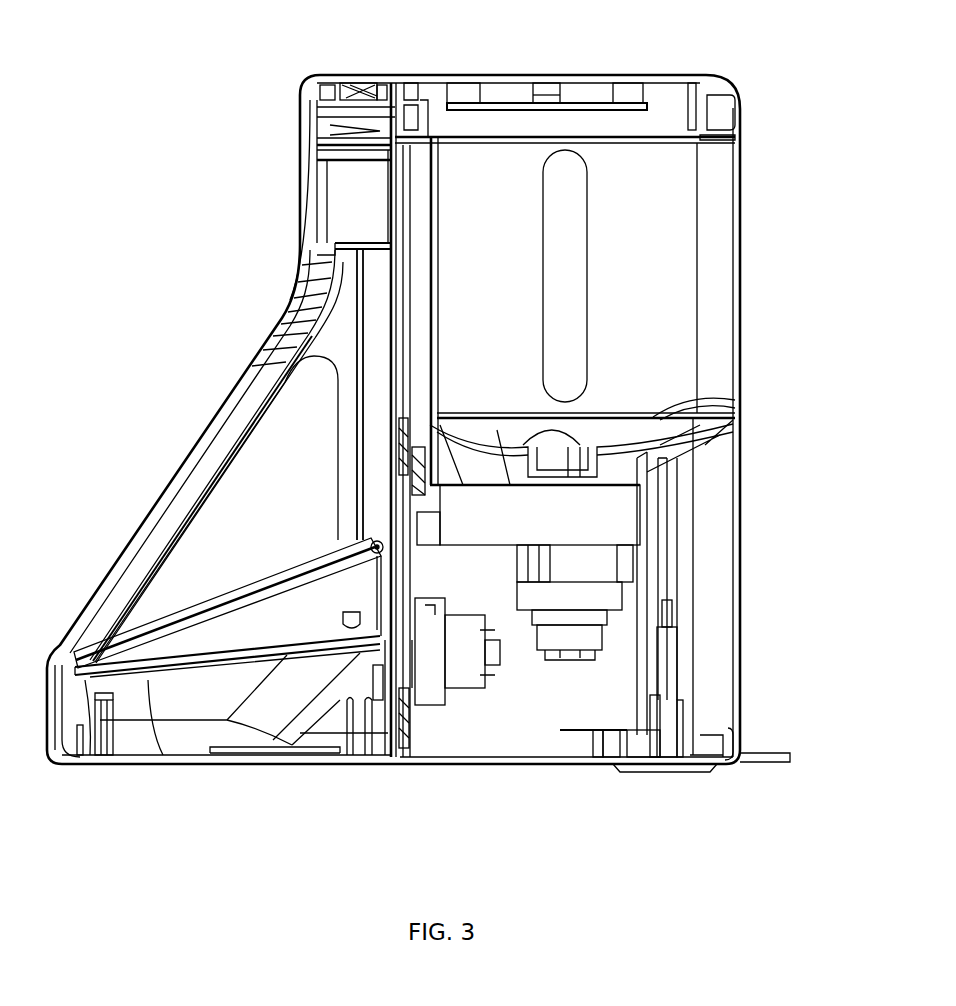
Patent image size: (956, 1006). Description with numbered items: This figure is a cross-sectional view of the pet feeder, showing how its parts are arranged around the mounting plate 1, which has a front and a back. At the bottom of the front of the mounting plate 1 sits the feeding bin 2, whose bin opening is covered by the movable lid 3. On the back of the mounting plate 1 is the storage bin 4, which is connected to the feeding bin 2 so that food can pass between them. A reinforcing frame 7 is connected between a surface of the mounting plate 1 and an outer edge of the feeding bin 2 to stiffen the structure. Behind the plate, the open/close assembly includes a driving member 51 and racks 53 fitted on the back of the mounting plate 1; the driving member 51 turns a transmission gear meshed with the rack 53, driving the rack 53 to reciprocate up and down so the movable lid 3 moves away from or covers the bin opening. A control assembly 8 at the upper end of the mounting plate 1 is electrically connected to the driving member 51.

The control assembly 8 is at (343, 67).
The storage bin 4 is at (640, 268).
The mounting plate 1 is at (405, 368).
The reinforcing frame 7 is at (200, 447).
The movable lid 3 is at (160, 608).
The feeding bin 2 is at (207, 690).
The driving member 51 is at (470, 665).
The rack 53 is at (393, 752).